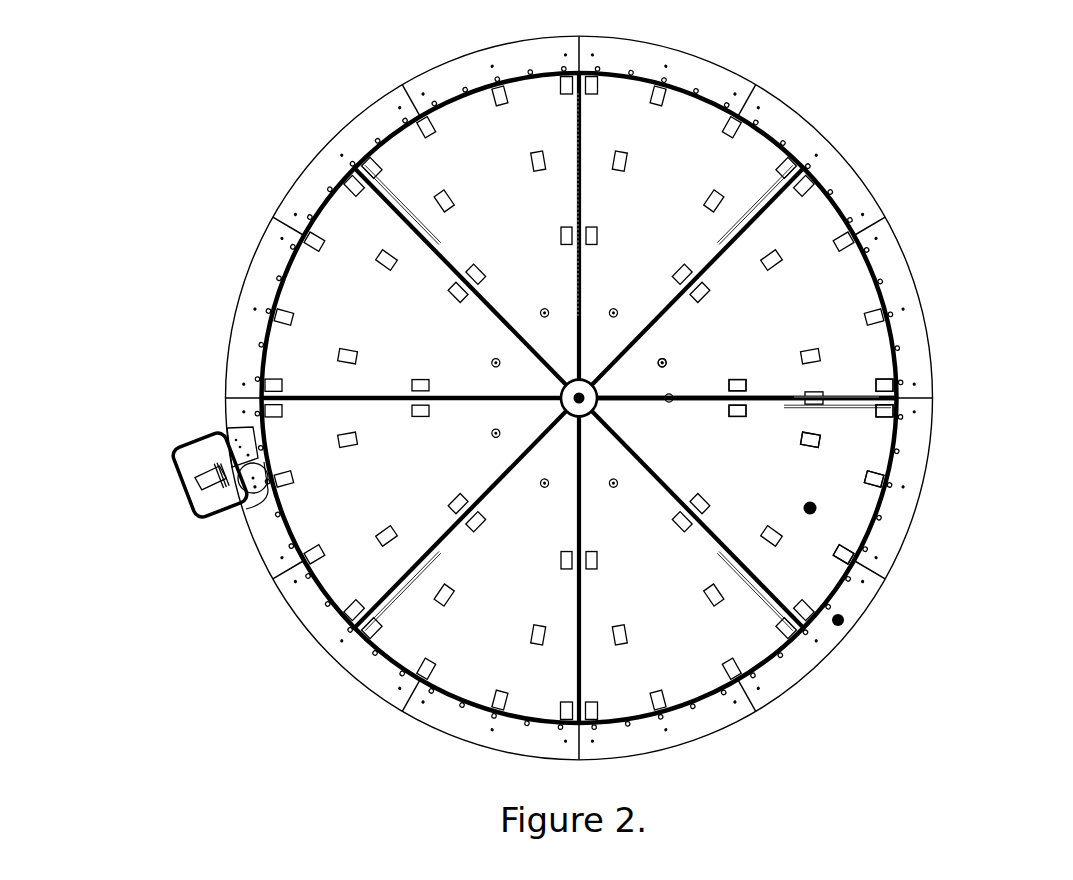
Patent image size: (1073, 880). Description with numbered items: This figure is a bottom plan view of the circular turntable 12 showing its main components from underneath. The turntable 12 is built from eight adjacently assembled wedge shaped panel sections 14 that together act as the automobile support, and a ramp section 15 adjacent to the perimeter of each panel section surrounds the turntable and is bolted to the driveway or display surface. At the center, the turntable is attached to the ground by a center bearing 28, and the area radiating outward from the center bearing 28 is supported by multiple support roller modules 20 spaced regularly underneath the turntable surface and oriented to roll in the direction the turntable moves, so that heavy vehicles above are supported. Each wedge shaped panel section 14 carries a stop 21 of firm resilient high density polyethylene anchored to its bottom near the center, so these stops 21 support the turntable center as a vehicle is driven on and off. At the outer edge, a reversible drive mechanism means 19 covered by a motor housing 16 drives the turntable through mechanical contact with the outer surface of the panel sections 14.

The turntable 12 is at (364, 136).
The wedge shaped panel section 14 is at (814, 512).
The ramp section 15 is at (842, 623).
The motor housing 16 is at (242, 516).
The reversible drive mechanism means 19 is at (227, 452).
The support roller module 20 is at (426, 616).
The stop 21 is at (682, 359).
The center bearing 28 is at (581, 392).